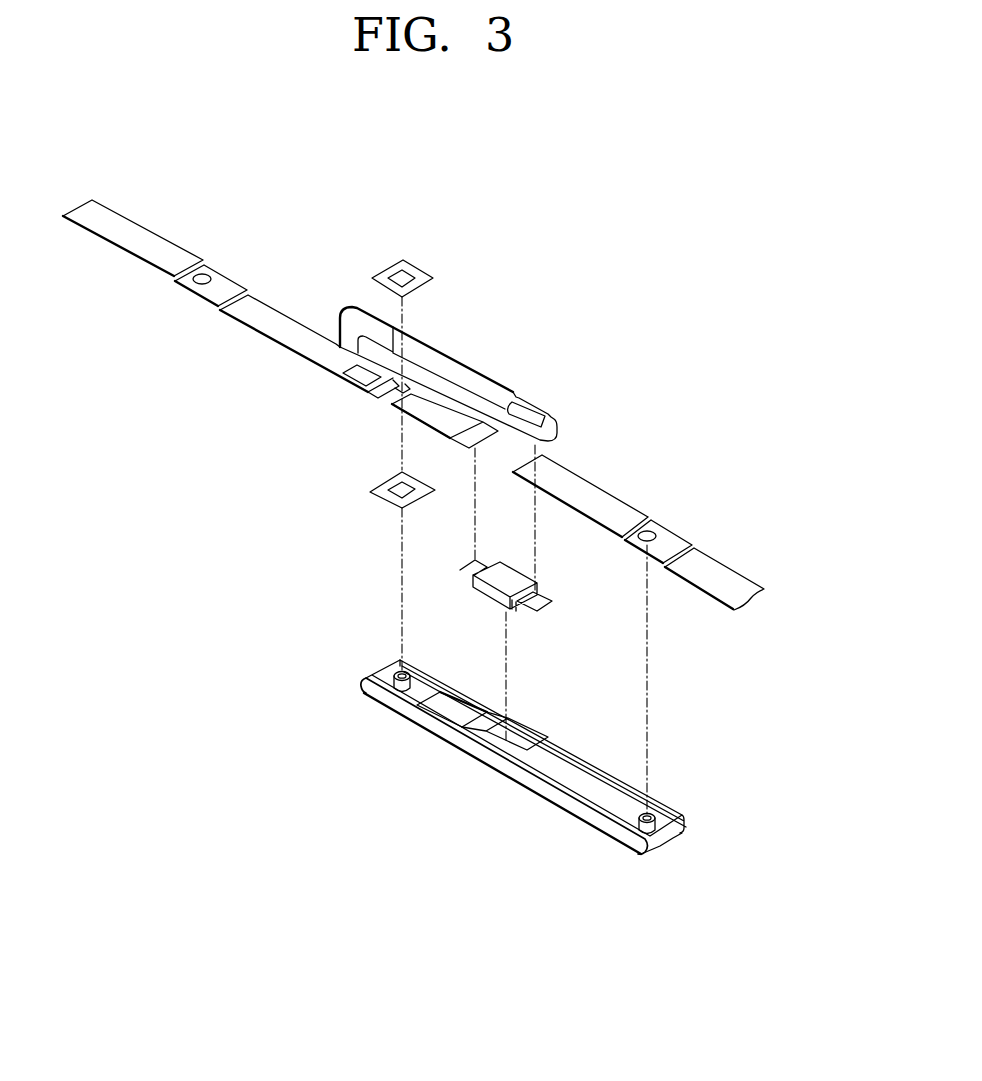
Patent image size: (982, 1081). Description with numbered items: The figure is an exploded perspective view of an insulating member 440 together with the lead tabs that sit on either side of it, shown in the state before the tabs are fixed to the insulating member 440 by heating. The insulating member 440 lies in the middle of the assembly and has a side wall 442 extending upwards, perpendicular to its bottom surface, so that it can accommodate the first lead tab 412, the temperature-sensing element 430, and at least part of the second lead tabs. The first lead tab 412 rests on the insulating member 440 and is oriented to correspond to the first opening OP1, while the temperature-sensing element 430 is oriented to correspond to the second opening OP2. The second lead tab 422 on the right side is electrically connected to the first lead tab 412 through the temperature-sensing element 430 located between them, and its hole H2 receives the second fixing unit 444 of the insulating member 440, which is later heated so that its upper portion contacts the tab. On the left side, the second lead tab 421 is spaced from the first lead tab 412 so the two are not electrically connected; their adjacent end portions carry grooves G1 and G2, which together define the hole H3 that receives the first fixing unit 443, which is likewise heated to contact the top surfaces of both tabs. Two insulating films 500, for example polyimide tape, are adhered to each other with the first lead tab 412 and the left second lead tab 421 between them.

The first lead tab 412 is at (463, 369).
The second lead tab 421 is at (379, 370).
The second lead tab 422 is at (607, 497).
The temperature-sensing element 430 is at (512, 583).
The insulating member 440 is at (532, 746).
The side wall 442 is at (598, 770).
The first fixing unit 443 is at (398, 672).
The second fixing unit 444 is at (648, 814).
The insulating film 500 is at (413, 267).
The hole H2 is at (207, 268).
The hole H3 is at (462, 298).
The groove G1 is at (403, 391).
The groove G2 is at (452, 415).
The first opening OP1 is at (443, 710).
The second opening OP2 is at (512, 748).